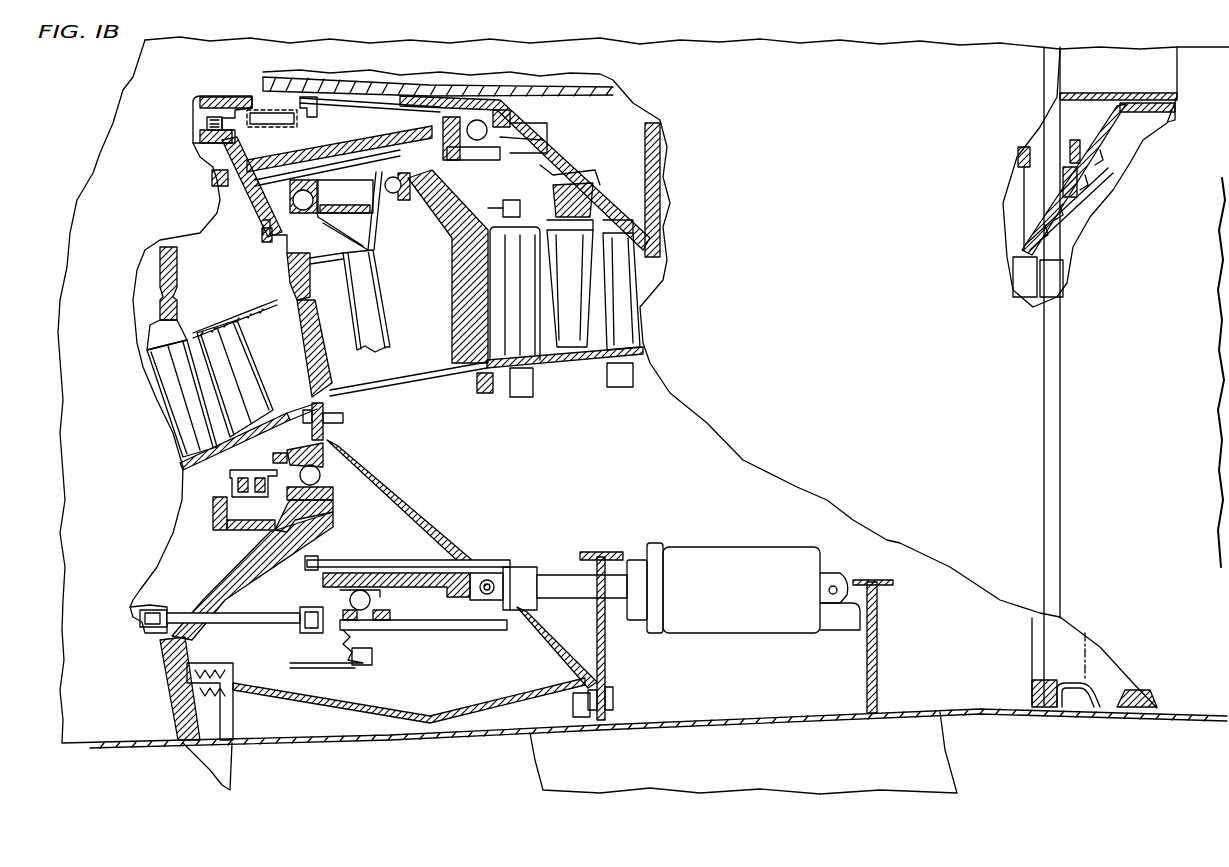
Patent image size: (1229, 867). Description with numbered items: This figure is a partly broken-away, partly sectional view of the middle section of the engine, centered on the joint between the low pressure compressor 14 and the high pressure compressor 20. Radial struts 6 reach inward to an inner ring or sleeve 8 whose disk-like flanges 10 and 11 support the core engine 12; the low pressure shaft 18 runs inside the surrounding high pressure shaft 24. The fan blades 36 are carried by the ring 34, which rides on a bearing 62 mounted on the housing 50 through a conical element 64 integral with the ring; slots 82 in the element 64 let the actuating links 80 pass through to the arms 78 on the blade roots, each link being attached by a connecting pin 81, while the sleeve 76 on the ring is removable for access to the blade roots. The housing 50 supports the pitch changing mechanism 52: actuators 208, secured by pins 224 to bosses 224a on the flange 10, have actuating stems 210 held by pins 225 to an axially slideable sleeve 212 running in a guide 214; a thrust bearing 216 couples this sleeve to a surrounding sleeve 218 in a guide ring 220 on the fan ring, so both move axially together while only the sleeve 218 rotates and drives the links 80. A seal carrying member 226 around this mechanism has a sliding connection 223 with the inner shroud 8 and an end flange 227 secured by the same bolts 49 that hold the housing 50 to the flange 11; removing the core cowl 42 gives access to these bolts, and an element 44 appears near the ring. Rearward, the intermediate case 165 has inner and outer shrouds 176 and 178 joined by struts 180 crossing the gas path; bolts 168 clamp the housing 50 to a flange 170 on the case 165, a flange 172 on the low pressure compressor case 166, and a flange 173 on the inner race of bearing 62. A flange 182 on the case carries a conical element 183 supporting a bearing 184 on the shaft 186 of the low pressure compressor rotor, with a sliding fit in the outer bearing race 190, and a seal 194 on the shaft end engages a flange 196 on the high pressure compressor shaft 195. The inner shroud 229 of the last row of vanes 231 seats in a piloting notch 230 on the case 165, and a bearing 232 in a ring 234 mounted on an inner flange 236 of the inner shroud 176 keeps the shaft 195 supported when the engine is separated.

The radial struts 6 is at (760, 779).
The inner ring or sleeve 8 is at (782, 717).
The flange 10 is at (877, 640).
The flange 11 is at (603, 635).
The core engine 12 is at (377, 752).
The low pressure compressor 14 is at (190, 273).
The low pressure shaft 18 is at (578, 96).
The high pressure compressor 20 is at (589, 369).
The high pressure shaft 24 is at (1115, 110).
The ring 34 is at (165, 660).
The fan blades 36 is at (232, 770).
The cowl 42 is at (1127, 713).
The mounting bracket 44 is at (1066, 709).
The bolts 49 is at (613, 700).
The housing 50 is at (405, 520).
The pitch changing mechanism 52 is at (520, 547).
The bearing 62 is at (320, 474).
The conical element 64 is at (293, 530).
The sleeve 76 is at (178, 742).
The arm 78 is at (130, 600).
The actuating link 80 is at (253, 614).
The connecting pin 81 is at (157, 607).
The slots 82 is at (200, 607).
The intermediate case 165 is at (407, 385).
The low pressure compressor case 166 is at (222, 460).
The bolts 168 is at (337, 415).
The flange 170 is at (325, 433).
The flange 172 is at (317, 395).
The flange 173 is at (312, 434).
The inner shroud 176 is at (398, 250).
The outer shroud 178 is at (428, 377).
The struts 180 is at (453, 295).
The flange 182 is at (283, 258).
The conical element 183 is at (262, 210).
The bearing 184 is at (207, 120).
The shaft 186 is at (227, 100).
The outer bearing race 190 is at (232, 128).
The seal 194 is at (283, 127).
The high pressure compressor shaft 195 is at (572, 132).
The flange 196 is at (308, 118).
The actuators 208 is at (752, 601).
The actuating stems 210 is at (500, 588).
The sleeve 212 is at (432, 593).
The guide 214 is at (408, 560).
The thrust bearing 216 is at (348, 597).
The surrounding sleeve 218 is at (370, 623).
The guide ring 220 is at (367, 665).
The sliding connection 223 is at (270, 718).
The pins 224 is at (835, 583).
The bosses 224a is at (853, 605).
The pins 225 is at (487, 580).
The seal carrying member 226 is at (400, 693).
The end flange 227 is at (578, 712).
The inner shroud 229 is at (258, 308).
The piloting notch 230 is at (283, 293).
The vanes 231 is at (245, 386).
The bearing 232 is at (418, 161).
The ring 234 is at (527, 163).
The inner flange 236 is at (470, 192).